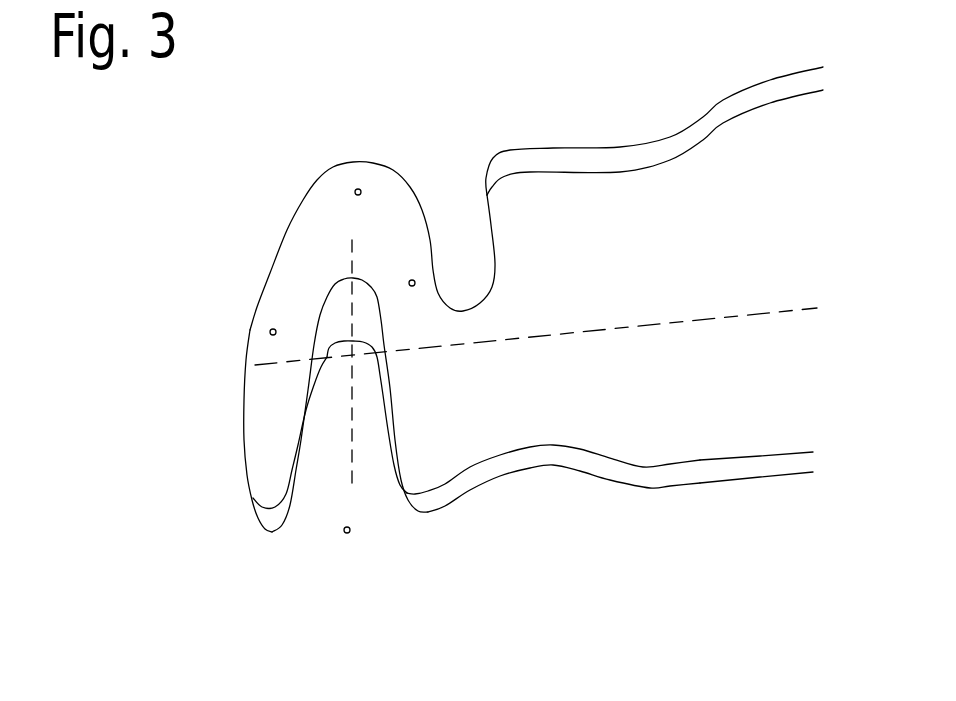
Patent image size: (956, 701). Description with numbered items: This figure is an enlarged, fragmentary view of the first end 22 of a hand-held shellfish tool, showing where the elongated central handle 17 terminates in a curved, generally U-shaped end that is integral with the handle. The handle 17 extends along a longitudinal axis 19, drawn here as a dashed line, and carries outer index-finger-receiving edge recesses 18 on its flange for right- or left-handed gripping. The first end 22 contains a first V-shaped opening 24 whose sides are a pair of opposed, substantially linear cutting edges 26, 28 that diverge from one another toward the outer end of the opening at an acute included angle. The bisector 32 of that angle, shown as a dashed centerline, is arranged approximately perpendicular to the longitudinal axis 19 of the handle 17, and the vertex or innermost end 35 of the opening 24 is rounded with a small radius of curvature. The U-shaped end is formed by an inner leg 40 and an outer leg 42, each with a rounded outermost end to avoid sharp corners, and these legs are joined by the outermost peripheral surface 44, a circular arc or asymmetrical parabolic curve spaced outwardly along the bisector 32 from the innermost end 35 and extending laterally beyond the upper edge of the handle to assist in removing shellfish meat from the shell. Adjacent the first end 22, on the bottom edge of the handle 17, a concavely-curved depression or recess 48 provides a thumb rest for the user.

The elongated central handle 17 is at (770, 385).
The index-finger-receiving edge recesses 18 is at (652, 140).
The longitudinal axis 19 is at (546, 333).
The first end 22 is at (360, 189).
The first V-shaped opening 24 is at (348, 533).
The cutting edge 26 is at (313, 402).
The cutting edge 28 is at (391, 392).
The bisector 32 is at (346, 238).
The vertex or innermost end 35 is at (338, 343).
The inner leg 40 is at (414, 286).
The outer leg 42 is at (271, 330).
The outermost peripheral surface 44 is at (351, 158).
The concavely-curved depression or recess 48 is at (540, 470).